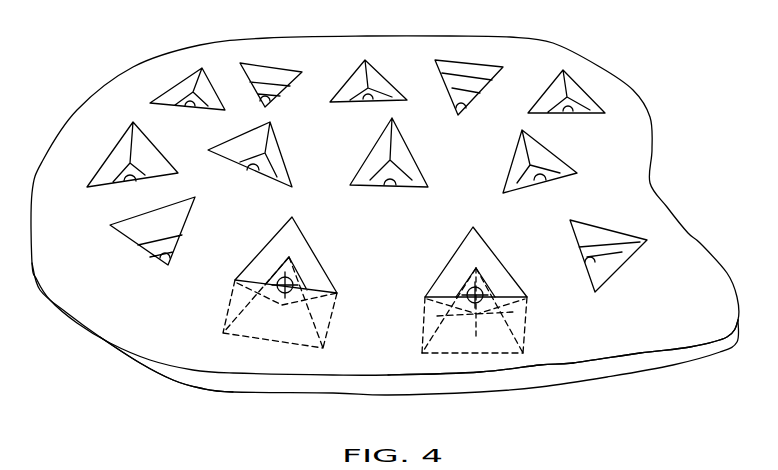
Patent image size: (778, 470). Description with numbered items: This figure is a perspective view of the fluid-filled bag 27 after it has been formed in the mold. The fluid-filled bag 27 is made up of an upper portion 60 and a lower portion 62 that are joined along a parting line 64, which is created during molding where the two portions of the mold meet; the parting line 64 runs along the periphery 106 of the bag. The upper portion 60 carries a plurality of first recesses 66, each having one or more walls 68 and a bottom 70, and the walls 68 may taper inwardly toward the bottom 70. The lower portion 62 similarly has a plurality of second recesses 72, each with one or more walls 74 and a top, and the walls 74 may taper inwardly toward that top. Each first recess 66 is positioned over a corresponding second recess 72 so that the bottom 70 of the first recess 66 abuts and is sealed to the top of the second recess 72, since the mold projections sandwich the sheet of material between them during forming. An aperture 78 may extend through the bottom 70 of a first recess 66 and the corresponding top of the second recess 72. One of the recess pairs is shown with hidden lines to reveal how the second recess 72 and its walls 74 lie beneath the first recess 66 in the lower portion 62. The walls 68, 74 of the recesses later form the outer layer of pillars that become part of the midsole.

The fluid-filled bag 27 is at (548, 50).
The upper portion 60 is at (385, 220).
The lower portion 62 is at (665, 358).
The parting line 64 is at (657, 347).
The periphery 106 is at (177, 380).
The first recesses 66 is at (468, 322).
The walls 68 is at (495, 260).
The bottom 70 is at (482, 285).
The aperture 78 is at (512, 309).
The walls 74 is at (437, 327).
The second recesses 72 is at (493, 353).